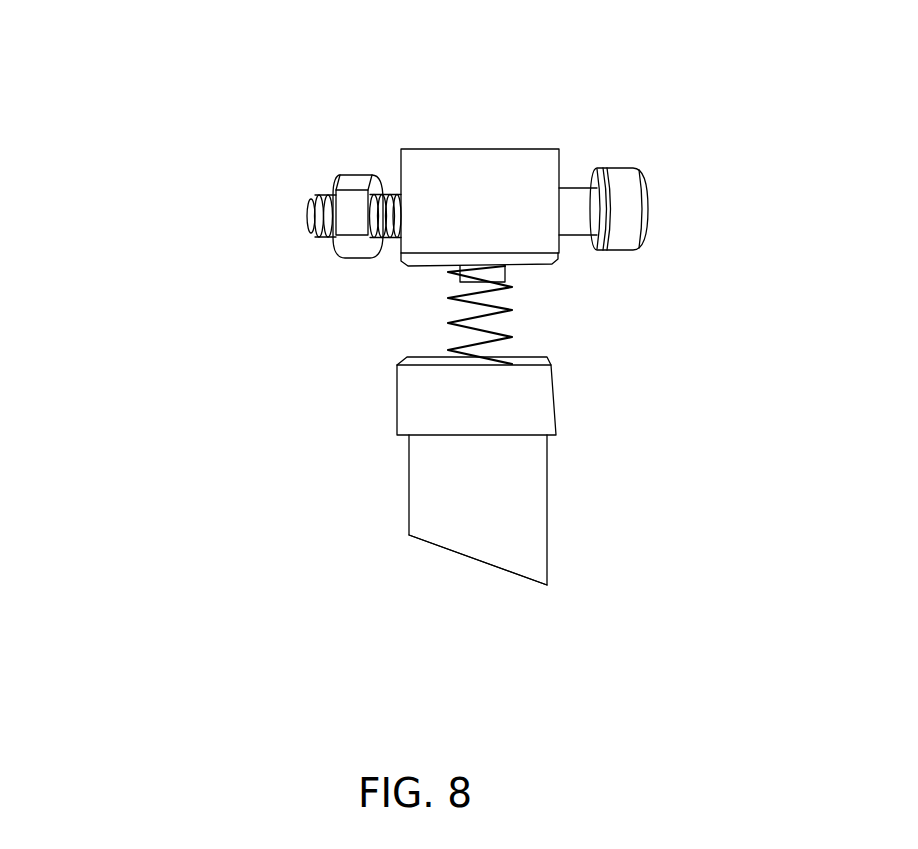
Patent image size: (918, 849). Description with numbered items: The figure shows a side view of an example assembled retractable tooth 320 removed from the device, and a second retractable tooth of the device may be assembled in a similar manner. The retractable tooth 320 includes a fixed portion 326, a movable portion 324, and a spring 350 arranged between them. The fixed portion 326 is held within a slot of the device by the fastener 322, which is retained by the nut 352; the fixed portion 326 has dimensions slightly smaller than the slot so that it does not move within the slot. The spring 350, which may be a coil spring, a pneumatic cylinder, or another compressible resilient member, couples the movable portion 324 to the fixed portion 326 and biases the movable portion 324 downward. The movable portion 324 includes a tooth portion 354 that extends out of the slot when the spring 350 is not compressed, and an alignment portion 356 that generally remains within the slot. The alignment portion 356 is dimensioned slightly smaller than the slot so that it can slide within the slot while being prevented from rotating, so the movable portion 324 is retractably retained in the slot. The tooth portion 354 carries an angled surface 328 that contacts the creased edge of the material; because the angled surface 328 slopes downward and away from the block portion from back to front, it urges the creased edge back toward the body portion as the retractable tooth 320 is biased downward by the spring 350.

The retractable tooth 320 is at (179, 145).
The fastener 322 is at (637, 185).
The movable portion 324 is at (316, 460).
The fixed portion 326 is at (477, 149).
The angled surface 328 is at (460, 555).
The spring 350 is at (513, 310).
The nut 352 is at (352, 256).
The tooth portion 354 is at (513, 497).
The alignment portion 356 is at (523, 402).